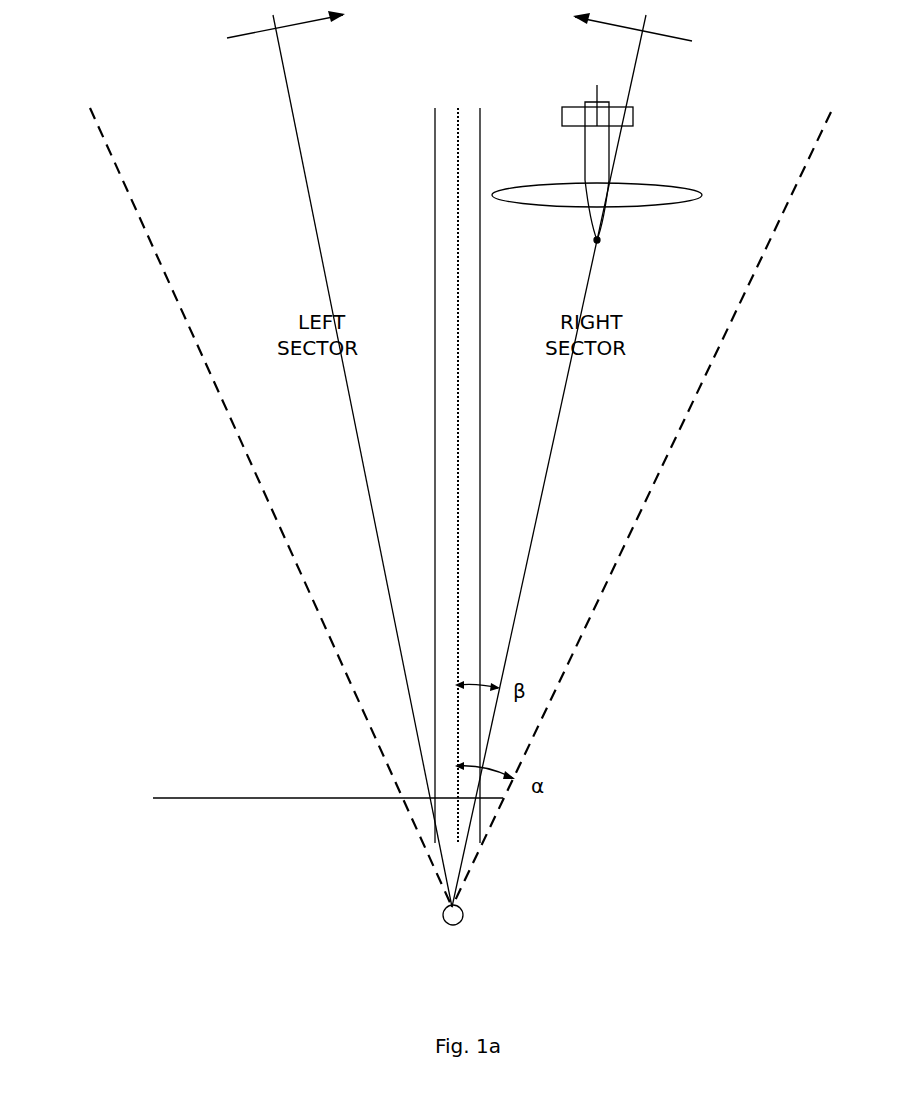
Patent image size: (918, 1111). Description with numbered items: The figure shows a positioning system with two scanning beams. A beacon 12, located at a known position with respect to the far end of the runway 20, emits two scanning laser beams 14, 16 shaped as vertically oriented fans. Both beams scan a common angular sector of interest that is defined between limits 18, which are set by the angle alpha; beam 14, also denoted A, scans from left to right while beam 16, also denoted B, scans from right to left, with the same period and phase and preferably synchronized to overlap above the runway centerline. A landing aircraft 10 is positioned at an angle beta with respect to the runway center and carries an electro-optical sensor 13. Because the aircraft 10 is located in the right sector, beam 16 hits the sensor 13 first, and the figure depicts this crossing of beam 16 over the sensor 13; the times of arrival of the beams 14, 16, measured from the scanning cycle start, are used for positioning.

The aircraft 10 is at (650, 173).
The beacon 12 is at (458, 906).
The electro-optical sensor 13 is at (597, 241).
The scanning laser beam 14 is at (352, 424).
The scanning laser beam 16 is at (555, 440).
The limits 18 is at (352, 697).
The runway 20 is at (453, 568).